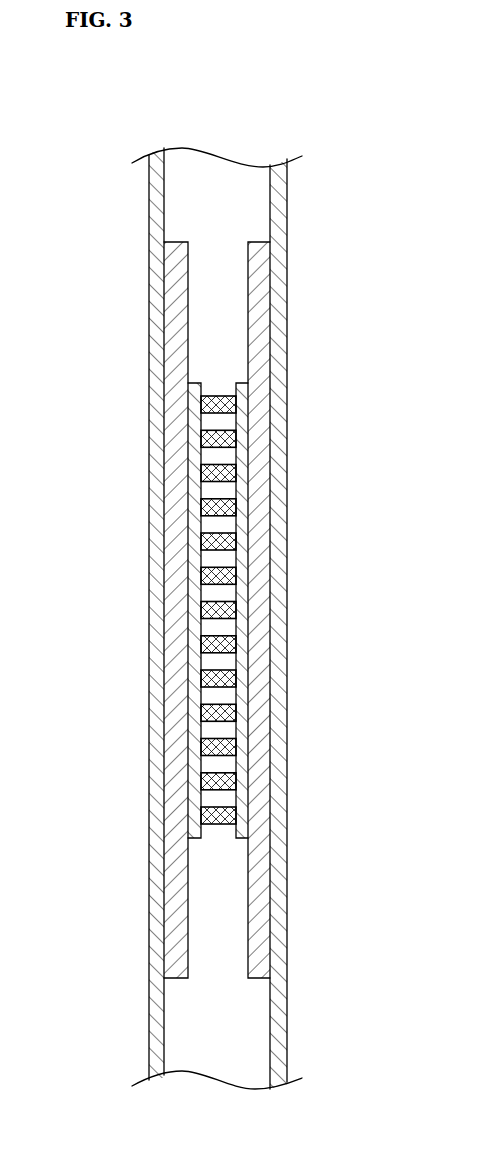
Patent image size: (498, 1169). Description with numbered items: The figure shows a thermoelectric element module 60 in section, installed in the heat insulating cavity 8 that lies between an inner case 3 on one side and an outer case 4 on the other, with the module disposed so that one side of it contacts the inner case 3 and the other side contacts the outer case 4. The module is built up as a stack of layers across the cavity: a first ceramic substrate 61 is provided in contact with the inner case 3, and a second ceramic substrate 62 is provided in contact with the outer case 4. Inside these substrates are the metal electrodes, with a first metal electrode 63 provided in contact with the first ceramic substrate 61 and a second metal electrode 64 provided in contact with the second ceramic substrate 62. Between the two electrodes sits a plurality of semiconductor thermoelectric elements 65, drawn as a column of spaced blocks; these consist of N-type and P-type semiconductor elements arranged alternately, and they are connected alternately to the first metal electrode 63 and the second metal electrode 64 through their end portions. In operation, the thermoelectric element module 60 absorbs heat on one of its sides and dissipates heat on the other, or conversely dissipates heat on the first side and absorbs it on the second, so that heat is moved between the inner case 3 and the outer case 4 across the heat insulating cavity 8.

The inner case 3 is at (158, 205).
The outer case 4 is at (280, 205).
The heat insulating cavity 8 is at (228, 203).
The thermoelectric element module 60 is at (273, 418).
The first ceramic substrate 61 is at (177, 307).
The second ceramic substrate 62 is at (260, 307).
The first metal electrode 63 is at (193, 732).
The second metal electrode 64 is at (240, 733).
The semiconductor thermoelectric elements 65 is at (227, 680).